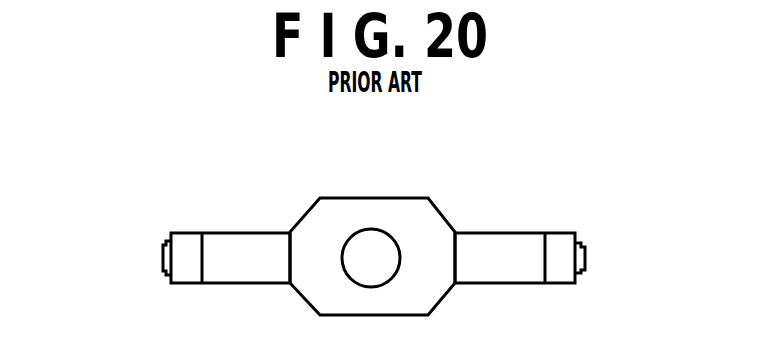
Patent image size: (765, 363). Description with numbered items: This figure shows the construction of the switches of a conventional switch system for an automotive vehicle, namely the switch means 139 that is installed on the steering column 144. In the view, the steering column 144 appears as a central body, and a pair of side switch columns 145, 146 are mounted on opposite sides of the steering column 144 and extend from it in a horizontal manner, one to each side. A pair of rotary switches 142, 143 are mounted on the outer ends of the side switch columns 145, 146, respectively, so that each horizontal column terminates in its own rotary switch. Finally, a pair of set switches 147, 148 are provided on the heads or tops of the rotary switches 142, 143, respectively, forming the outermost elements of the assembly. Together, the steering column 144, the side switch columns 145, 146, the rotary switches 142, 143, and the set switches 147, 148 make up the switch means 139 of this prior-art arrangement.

The switch means 139 is at (452, 155).
The rotary switch 142 is at (187, 233).
The rotary switch 143 is at (562, 233).
The steering column 144 is at (445, 298).
The side switch column 145 is at (253, 233).
The side switch column 146 is at (507, 233).
The set switch 147 is at (163, 262).
The set switch 148 is at (585, 255).